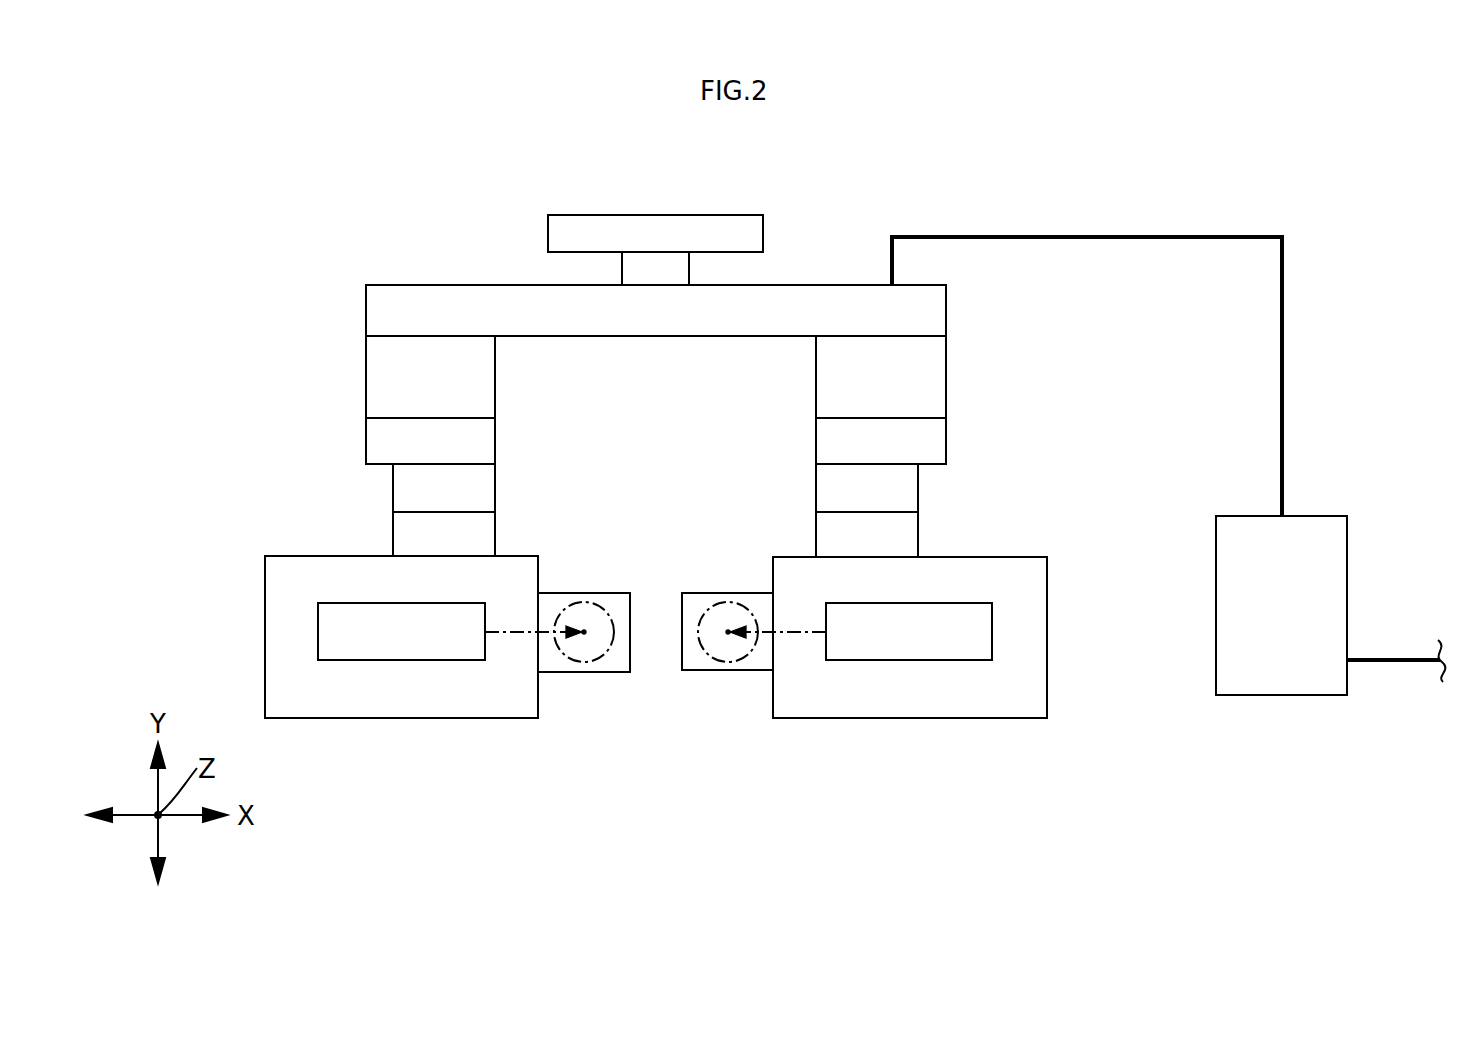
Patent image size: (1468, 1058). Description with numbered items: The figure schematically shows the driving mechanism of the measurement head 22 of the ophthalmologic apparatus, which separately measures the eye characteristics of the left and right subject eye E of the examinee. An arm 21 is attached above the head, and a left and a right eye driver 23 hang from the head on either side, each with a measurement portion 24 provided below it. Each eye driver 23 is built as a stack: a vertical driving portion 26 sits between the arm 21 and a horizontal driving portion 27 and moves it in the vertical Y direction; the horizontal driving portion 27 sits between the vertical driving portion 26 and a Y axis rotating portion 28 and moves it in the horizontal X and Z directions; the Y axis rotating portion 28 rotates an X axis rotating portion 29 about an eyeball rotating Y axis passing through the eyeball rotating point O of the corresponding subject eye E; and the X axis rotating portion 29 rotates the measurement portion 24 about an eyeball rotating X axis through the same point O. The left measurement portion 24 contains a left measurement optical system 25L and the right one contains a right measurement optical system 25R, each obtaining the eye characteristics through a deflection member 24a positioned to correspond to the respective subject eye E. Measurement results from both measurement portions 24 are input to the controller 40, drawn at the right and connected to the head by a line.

The arm 21 is at (568, 215).
The measurement head 22 is at (378, 266).
The eye driver 23 is at (236, 358).
The measurement portion 24 is at (265, 590).
The deflection member 24a is at (608, 672).
The left measurement optical system 25L is at (318, 654).
The right measurement optical system 25R is at (992, 654).
The vertical driving portion 26 is at (366, 381).
The horizontal driving portion 27 is at (366, 451).
The Y axis rotating portion 28 is at (393, 503).
The X axis rotating portion 29 is at (393, 544).
The controller 40 is at (1320, 516).
The subject eye E is at (606, 610).
The eyeball rotating point O is at (584, 636).